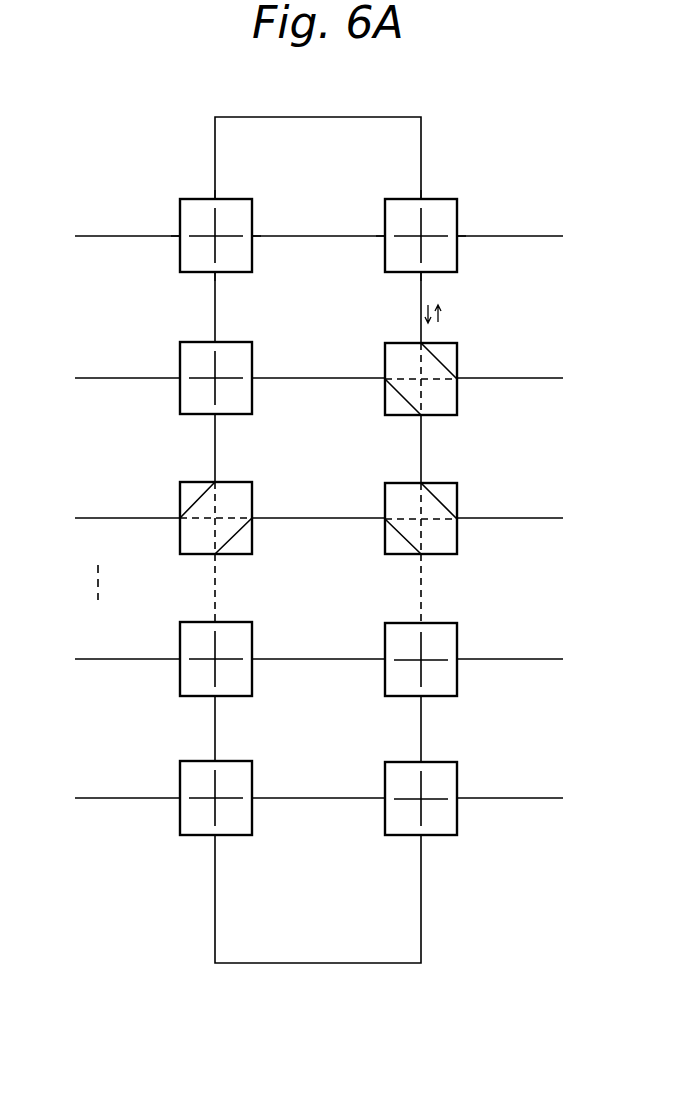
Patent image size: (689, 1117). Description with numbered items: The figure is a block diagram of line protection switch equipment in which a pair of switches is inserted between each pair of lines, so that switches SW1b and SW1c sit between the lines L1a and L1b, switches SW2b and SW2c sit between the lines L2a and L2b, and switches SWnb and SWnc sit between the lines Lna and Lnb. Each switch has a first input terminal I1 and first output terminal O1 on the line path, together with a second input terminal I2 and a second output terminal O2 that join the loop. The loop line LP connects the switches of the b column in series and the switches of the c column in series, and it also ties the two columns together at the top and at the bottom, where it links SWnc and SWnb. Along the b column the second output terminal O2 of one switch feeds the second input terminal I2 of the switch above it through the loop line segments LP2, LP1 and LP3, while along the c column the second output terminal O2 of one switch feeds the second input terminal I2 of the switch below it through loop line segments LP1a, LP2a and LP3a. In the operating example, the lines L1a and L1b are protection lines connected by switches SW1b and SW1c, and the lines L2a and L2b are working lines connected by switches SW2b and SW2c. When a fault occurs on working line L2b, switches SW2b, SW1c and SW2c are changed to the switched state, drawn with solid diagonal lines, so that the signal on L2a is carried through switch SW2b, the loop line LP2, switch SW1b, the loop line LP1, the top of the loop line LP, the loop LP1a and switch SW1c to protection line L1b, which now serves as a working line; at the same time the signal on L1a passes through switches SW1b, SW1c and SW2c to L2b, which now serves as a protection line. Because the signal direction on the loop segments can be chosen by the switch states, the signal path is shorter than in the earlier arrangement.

The loop line LP is at (321, 117).
The loop line LP1 is at (215, 301).
The loop line LP1a is at (426, 294).
The loop line LP2 is at (214, 441).
The loop line LP2a is at (423, 433).
The loop line LP3 is at (213, 569).
The loop line LP3a is at (423, 562).
The protection line L1a is at (126, 363).
The protection line L1b is at (408, 366).
The working line L2a is at (126, 503).
The working line L2b is at (411, 506).
The line Lna is at (126, 785).
The line Lnb is at (407, 787).
The switch SW1b is at (245, 342).
The switch SW1c is at (460, 343).
The switch SW2b is at (241, 482).
The switch SW2c is at (458, 483).
The switch SWnb is at (237, 761).
The switch SWnc is at (448, 764).
The first input terminal I1 is at (272, 248).
The second input terminal I2 is at (318, 238).
The first output terminal O1 is at (367, 248).
The second output terminal O2 is at (302, 242).